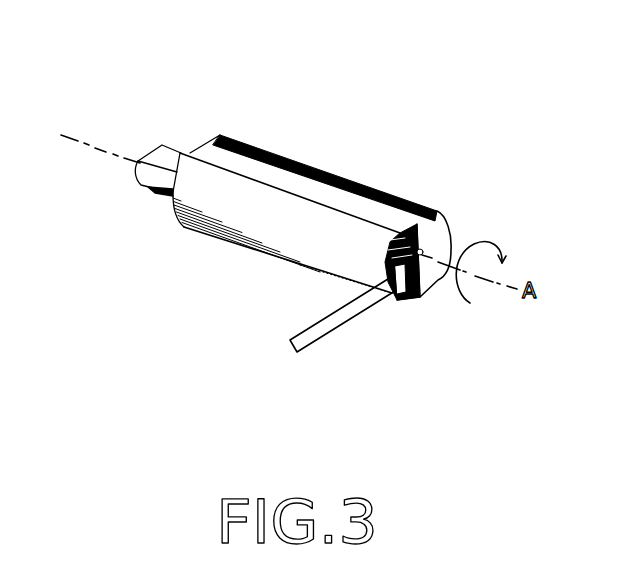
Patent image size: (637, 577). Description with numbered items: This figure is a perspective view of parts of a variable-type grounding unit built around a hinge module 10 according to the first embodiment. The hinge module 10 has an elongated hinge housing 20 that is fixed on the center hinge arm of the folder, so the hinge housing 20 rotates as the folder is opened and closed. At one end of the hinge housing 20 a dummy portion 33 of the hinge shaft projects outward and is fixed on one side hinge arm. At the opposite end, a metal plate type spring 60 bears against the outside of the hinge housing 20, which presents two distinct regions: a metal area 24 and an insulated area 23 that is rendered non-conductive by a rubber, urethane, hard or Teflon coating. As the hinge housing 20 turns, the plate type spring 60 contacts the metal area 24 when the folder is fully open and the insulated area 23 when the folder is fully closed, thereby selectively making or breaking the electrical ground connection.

The hinge module 10 is at (318, 132).
The hinge housing 20 is at (262, 235).
The metal area 24 is at (437, 232).
The insulated area 23 is at (413, 293).
The plate type spring 60 is at (365, 307).
The dummy portion 33 is at (153, 173).